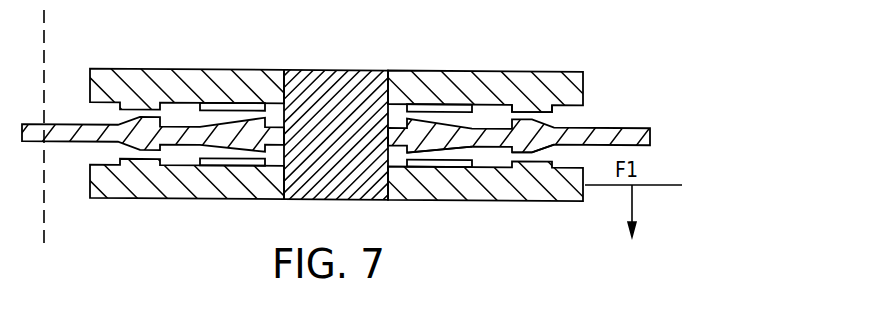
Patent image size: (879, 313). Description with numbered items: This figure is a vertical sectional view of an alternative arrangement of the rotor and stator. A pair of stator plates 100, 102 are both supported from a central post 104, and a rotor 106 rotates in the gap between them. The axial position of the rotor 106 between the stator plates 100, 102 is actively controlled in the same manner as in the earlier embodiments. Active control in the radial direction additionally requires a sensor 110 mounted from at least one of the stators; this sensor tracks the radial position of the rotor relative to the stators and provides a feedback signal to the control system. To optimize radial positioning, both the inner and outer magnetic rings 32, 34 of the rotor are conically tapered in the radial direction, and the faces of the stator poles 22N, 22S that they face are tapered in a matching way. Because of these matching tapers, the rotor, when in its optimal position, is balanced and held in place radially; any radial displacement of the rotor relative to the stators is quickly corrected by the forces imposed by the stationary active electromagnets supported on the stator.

The stator plate 100 is at (585, 87).
The stator plate 102 is at (575, 202).
The central post 104 is at (317, 78).
The rotor 106 is at (650, 135).
The pole 22N is at (449, 108).
The pole 22S is at (528, 104).
The inner magnetic ring 32 is at (434, 148).
The outer magnetic ring 34 is at (536, 140).
The sensor 110 is at (645, 172).